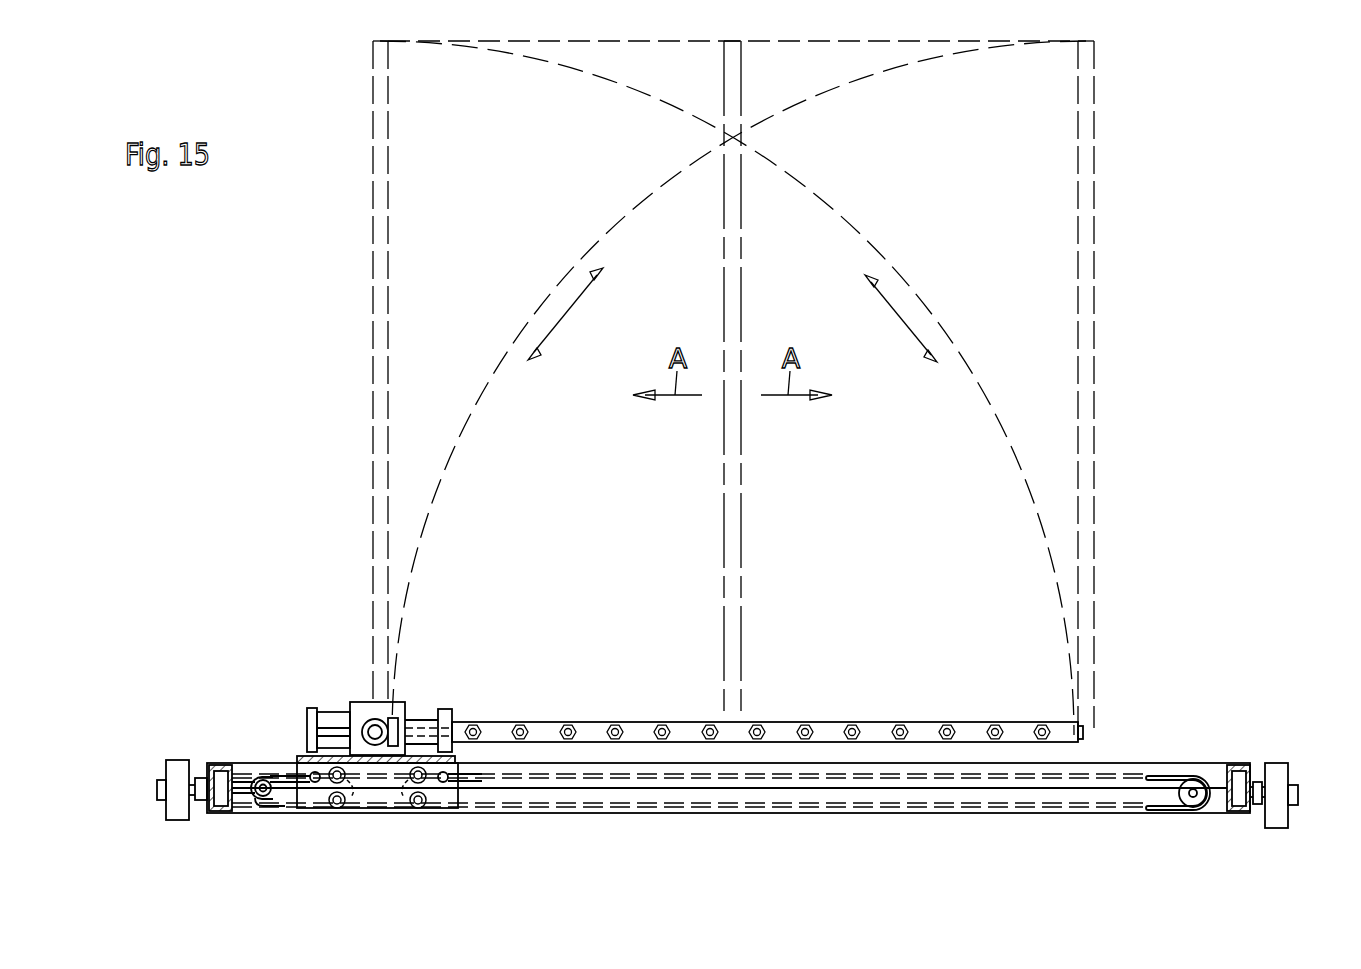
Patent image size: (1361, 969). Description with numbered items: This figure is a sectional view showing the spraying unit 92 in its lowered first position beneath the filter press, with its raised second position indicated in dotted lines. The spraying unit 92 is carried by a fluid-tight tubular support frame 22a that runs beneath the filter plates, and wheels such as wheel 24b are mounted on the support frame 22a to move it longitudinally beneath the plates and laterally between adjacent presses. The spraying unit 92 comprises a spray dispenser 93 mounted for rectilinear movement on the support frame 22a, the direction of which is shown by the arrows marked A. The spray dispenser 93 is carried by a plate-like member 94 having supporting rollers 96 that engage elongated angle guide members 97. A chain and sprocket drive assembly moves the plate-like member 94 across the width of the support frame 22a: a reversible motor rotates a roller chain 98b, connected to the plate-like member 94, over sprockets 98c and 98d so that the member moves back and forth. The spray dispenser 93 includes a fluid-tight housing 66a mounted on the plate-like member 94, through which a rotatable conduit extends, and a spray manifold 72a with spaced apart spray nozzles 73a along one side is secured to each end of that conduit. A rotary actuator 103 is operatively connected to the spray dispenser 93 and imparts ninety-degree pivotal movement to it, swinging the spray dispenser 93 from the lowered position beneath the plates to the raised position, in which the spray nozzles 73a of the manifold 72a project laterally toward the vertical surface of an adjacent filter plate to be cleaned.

The tubular support frame 22a is at (1112, 764).
The wheel 24b is at (180, 762).
The fluid-tight housing 66a is at (365, 700).
The spray manifold 72a is at (787, 733).
The spray nozzles 73a is at (660, 725).
The spraying unit 92 is at (352, 660).
The spray dispenser 93 is at (402, 697).
The plate-like member 94 is at (338, 755).
The supporting rollers 96 is at (352, 790).
The elongated angle guide members 97 is at (658, 787).
The roller chain 98b is at (260, 768).
The sprocket 98c is at (1193, 786).
The sprocket 98d is at (277, 774).
The rotary actuator 103 is at (430, 712).